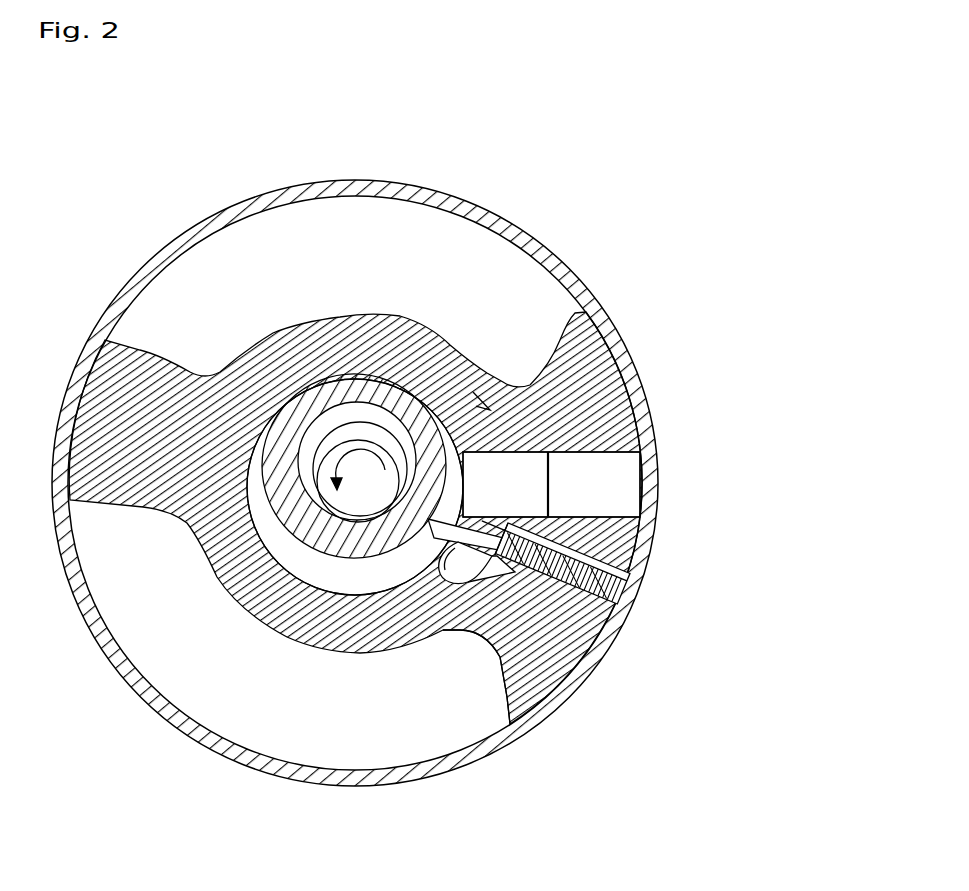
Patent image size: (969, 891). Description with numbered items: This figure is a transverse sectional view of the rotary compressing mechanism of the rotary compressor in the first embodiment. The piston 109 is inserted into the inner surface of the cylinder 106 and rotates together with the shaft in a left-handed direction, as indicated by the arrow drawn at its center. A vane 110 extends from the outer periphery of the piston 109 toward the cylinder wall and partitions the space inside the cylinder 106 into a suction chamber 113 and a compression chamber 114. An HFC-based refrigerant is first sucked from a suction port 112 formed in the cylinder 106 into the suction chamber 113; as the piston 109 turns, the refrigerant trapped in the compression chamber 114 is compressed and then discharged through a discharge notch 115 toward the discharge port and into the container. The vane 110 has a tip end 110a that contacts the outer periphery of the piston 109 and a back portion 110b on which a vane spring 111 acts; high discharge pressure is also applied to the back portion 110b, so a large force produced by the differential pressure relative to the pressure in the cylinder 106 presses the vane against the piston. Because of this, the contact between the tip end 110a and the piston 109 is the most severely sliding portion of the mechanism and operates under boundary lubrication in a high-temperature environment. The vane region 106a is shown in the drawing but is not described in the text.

The cylinder 106 is at (597, 334).
The bush recess of cylinder 106a is at (463, 583).
The piston 109 is at (350, 395).
The vane 110 is at (553, 482).
The tip end of the vane 110a is at (457, 553).
The back portion of the vane 110b is at (627, 578).
The vane spring 111 is at (627, 597).
The suction port 112 is at (583, 448).
The suction chamber 113 is at (505, 387).
The compression chamber 114 is at (300, 558).
The discharge notch 115 is at (457, 648).